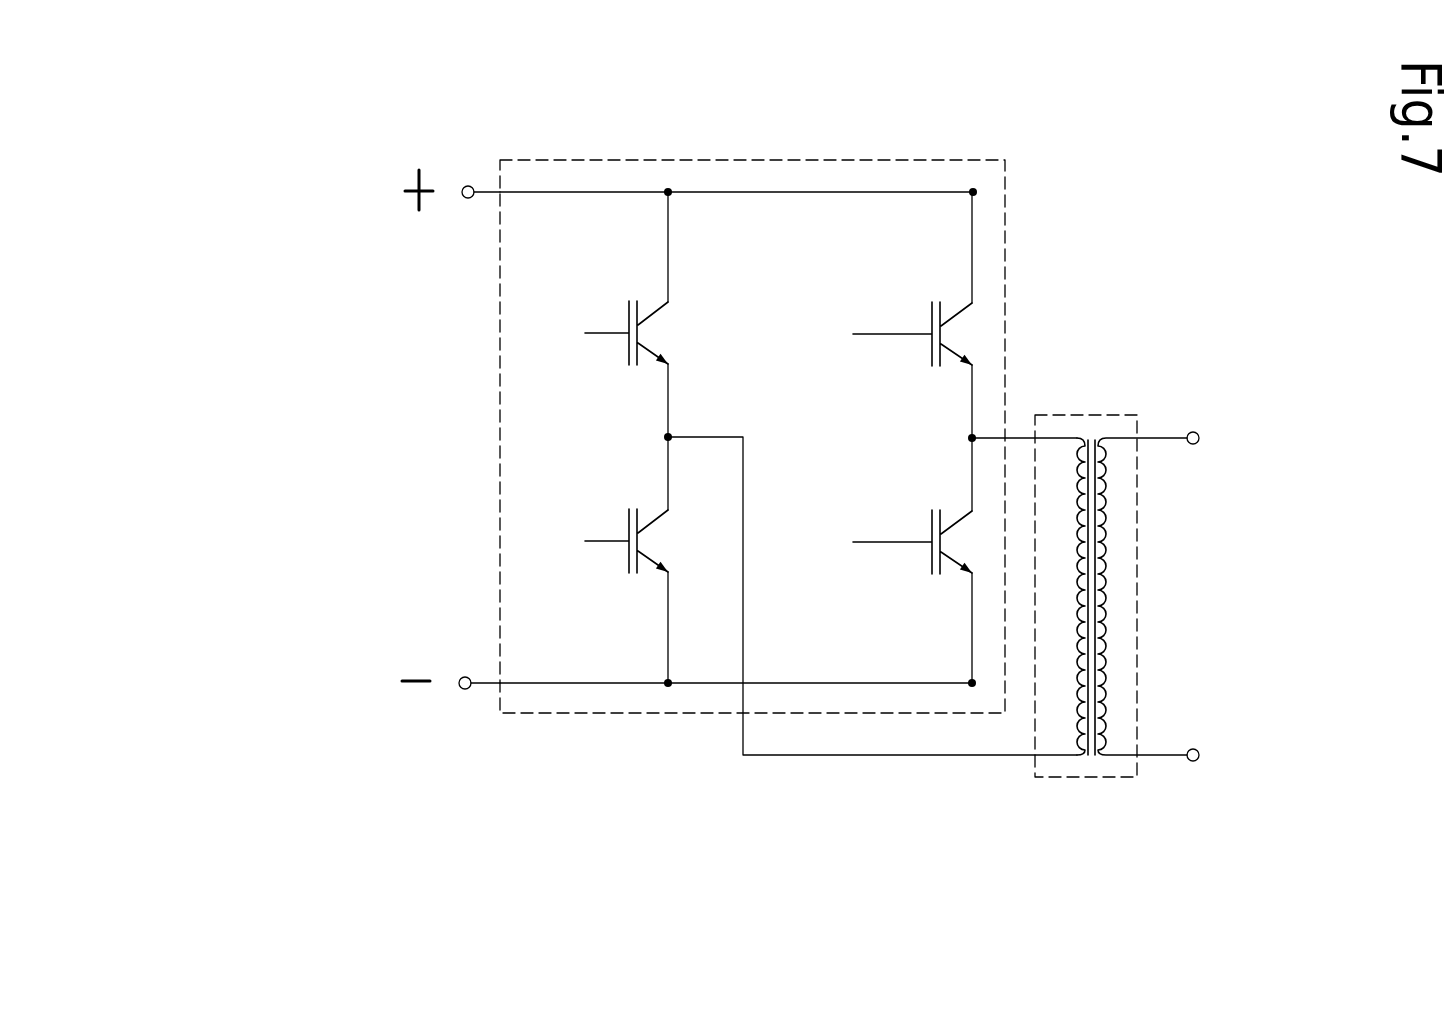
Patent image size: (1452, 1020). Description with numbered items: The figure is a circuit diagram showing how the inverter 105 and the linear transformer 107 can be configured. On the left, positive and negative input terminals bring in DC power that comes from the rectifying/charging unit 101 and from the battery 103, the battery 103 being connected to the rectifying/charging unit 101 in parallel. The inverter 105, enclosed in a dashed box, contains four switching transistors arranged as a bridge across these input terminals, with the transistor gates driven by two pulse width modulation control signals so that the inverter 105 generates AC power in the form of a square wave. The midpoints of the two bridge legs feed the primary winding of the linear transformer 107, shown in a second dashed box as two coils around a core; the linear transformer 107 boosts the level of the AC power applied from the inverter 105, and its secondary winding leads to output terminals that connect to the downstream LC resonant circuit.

The rectifying/charging unit 101 is at (314, 182).
The battery 103 is at (314, 448).
The inverter 105 is at (597, 713).
The linear transformer 107 is at (1068, 778).